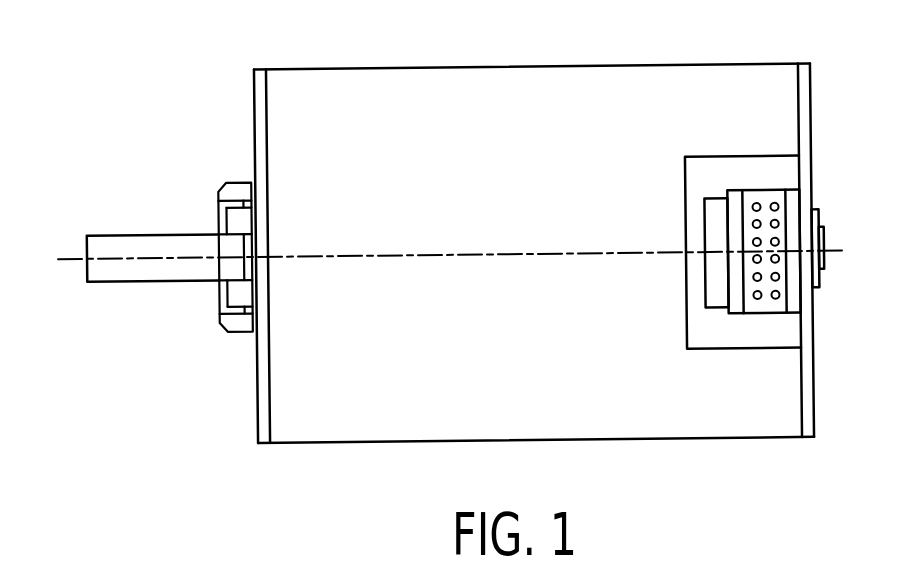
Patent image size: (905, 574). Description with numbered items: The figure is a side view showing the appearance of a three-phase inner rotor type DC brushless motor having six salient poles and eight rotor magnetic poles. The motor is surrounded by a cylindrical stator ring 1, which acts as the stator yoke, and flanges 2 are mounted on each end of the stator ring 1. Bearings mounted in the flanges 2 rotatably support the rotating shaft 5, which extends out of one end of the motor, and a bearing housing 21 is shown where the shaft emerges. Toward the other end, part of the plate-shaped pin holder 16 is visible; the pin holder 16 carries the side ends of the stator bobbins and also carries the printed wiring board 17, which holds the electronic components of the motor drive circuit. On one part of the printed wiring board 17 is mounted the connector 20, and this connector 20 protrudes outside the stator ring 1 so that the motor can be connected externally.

The stator ring 1 is at (405, 66).
The flange 2 is at (255, 419).
The rotating shaft 5 is at (160, 282).
The pin holder 16 is at (686, 323).
The printed wiring board 17 is at (734, 192).
The connector 20 is at (770, 316).
The bearing housing 21 is at (230, 331).